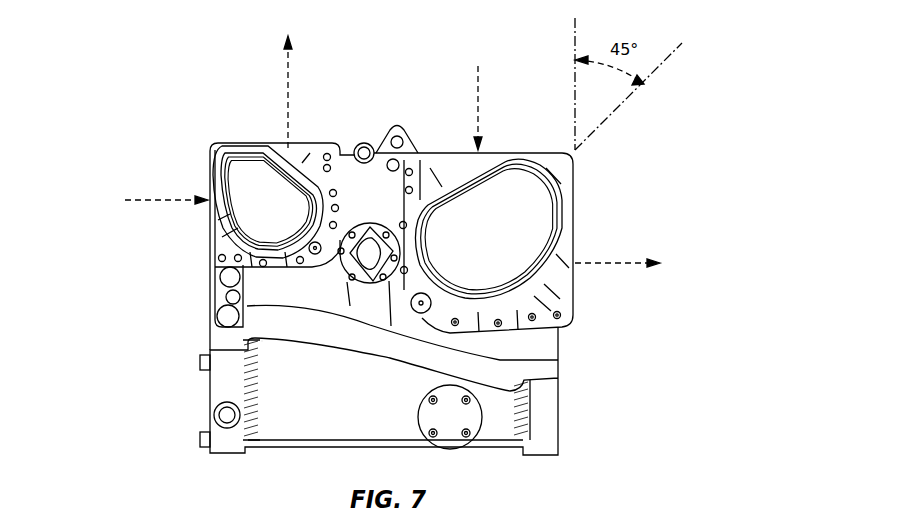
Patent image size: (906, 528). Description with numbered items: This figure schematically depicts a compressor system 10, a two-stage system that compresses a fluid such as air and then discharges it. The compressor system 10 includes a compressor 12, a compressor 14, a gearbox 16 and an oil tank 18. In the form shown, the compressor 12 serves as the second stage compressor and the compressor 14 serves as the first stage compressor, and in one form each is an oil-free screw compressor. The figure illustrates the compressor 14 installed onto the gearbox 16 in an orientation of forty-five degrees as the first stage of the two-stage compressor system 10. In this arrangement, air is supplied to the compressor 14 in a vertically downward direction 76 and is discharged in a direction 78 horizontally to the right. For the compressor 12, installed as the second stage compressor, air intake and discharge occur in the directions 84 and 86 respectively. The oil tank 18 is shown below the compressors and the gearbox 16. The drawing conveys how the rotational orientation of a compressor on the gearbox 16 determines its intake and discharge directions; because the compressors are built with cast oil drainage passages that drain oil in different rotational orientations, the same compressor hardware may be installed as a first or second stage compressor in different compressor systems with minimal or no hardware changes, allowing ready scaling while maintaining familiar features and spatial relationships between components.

The compressor system 10 is at (717, 42).
The compressor 12 is at (287, 217).
The compressor 14 is at (505, 253).
The gearbox 16 is at (400, 124).
The oil tank 18 is at (320, 401).
The vertically downward direction 76 is at (478, 78).
The discharge direction 78 is at (603, 263).
The air intake direction 84 is at (152, 200).
The air discharge direction 86 is at (288, 97).